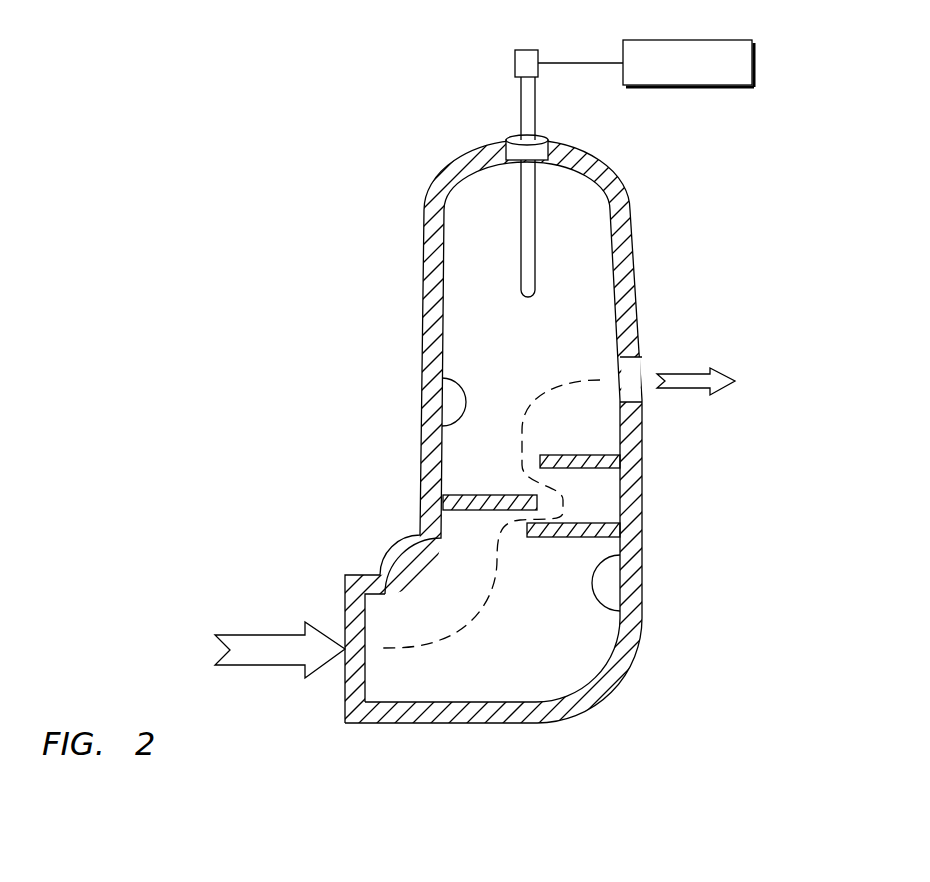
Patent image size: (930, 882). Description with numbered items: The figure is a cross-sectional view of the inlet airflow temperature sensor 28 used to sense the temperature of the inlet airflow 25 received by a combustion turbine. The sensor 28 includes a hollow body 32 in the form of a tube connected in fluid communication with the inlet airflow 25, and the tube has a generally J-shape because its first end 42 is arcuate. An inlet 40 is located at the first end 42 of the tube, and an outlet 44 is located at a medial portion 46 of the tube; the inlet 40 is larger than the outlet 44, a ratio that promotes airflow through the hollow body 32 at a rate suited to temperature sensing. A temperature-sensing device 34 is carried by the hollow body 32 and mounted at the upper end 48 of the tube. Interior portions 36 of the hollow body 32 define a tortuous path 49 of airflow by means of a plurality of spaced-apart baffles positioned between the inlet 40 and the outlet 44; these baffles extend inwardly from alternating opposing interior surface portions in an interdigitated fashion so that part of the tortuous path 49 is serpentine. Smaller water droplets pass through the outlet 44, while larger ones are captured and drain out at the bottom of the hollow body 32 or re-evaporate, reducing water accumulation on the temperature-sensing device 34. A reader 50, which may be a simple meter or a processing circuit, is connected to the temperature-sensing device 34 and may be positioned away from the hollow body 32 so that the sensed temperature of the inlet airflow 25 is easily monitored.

The inlet airflow 25 is at (280, 632).
The inlet airflow temperature sensor 28 is at (377, 205).
The hollow body 32 is at (605, 155).
The temperature-sensing device 34 is at (522, 107).
The interior portions 36 is at (533, 652).
The inlet 40 is at (353, 667).
The first end 42 is at (535, 723).
The outlet 44 is at (634, 372).
The medial portion 46 is at (636, 273).
The upper end 48 is at (455, 162).
The tortuous path 49 is at (438, 640).
The reader 50 is at (690, 40).